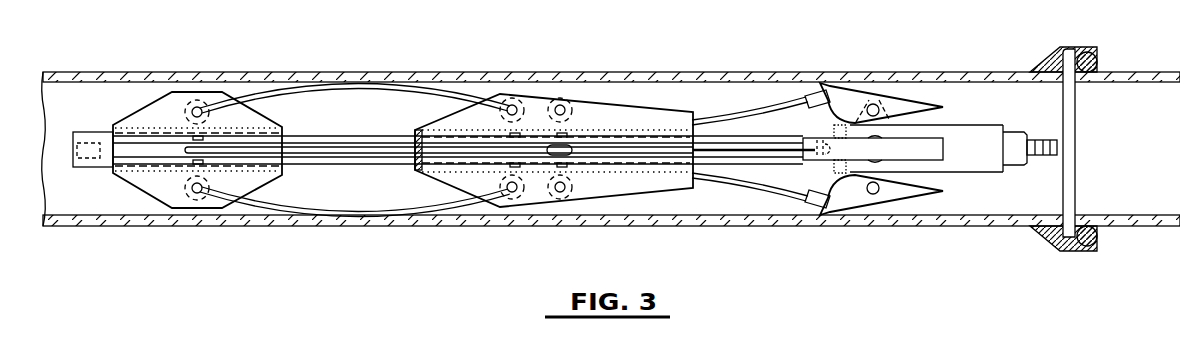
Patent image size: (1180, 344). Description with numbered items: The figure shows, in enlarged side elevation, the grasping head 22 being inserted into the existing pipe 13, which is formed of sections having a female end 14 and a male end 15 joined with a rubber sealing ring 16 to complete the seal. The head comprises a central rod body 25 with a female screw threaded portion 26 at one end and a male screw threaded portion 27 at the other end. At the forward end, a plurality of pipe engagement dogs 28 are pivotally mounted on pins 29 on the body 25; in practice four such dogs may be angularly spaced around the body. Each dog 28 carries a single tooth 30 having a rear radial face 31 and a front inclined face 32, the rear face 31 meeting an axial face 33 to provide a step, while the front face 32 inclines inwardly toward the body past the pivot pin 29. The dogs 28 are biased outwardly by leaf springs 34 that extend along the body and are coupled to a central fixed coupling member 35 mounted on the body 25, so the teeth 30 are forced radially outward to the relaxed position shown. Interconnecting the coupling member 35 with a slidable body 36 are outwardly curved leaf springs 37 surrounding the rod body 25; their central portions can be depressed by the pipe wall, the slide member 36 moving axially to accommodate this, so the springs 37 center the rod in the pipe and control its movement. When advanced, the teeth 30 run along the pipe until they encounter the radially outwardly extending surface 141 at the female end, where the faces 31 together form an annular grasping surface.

The existing pipe 13 is at (291, 70).
The grasping head 22 is at (579, 63).
The central rod body 25 is at (355, 141).
The female screw threaded portion 26 is at (90, 138).
The male screw threaded portion 27 is at (1040, 139).
The pipe engagement dogs 28 is at (857, 95).
The pins 29 is at (887, 135).
The tooth 30 is at (826, 88).
The rear radial face 31 is at (822, 82).
The front inclined face 32 is at (836, 140).
The axial face 33 is at (806, 98).
The leaf springs 34 is at (765, 182).
The central fixed coupling member 35 is at (650, 114).
The slidable body 36 is at (160, 106).
The outwardly curved leaf springs 37 is at (378, 88).
The female end 14 is at (1059, 46).
The radially outwardly extending surface 141 is at (1067, 107).
The male end 15 is at (1081, 217).
The rubber sealing ring 16 is at (1097, 62).